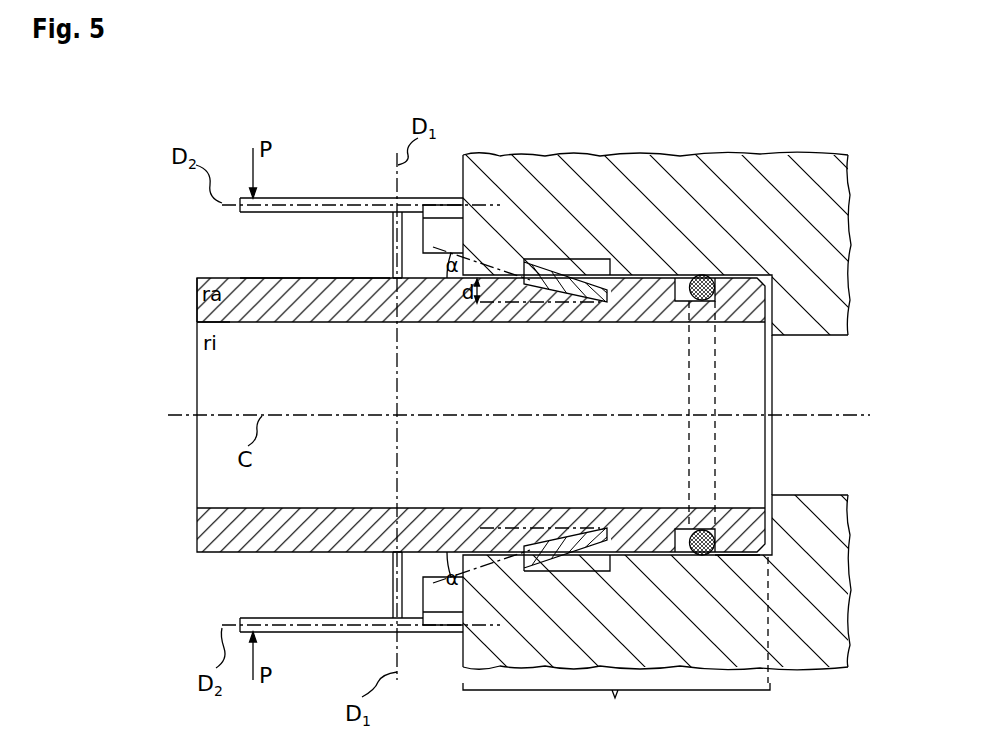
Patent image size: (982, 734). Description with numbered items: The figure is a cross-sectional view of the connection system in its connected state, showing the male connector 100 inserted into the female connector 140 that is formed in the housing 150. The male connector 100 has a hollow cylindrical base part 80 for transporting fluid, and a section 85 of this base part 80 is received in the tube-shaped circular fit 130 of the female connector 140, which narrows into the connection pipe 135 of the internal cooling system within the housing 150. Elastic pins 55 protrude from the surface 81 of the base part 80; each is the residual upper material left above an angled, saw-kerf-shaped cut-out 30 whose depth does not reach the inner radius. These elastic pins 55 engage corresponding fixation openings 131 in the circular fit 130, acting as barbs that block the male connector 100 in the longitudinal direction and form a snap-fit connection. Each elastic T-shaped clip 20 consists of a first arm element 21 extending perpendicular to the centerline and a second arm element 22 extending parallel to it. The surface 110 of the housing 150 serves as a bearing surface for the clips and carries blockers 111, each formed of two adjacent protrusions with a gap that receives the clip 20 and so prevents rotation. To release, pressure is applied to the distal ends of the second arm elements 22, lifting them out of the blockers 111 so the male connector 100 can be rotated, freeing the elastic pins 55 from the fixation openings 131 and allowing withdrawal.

The male connector 100 is at (168, 284).
The elastic T-shaped clip 20 is at (351, 377).
The first arm element 21 is at (393, 245).
The second arm element 22 is at (303, 197).
The cut-out 30 is at (606, 270).
The elastic pin 55 is at (562, 262).
The hollow cylindrical base part 80 is at (444, 365).
The surface 81 is at (294, 278).
The section 85 is at (616, 643).
The surface 110 is at (633, 432).
The blocker 111 is at (437, 222).
The tube-shaped circular fit 130 is at (737, 557).
The fixation opening 131 is at (598, 262).
The connection pipe 135 is at (788, 369).
The female connector 140 is at (731, 198).
The housing 150 is at (720, 646).